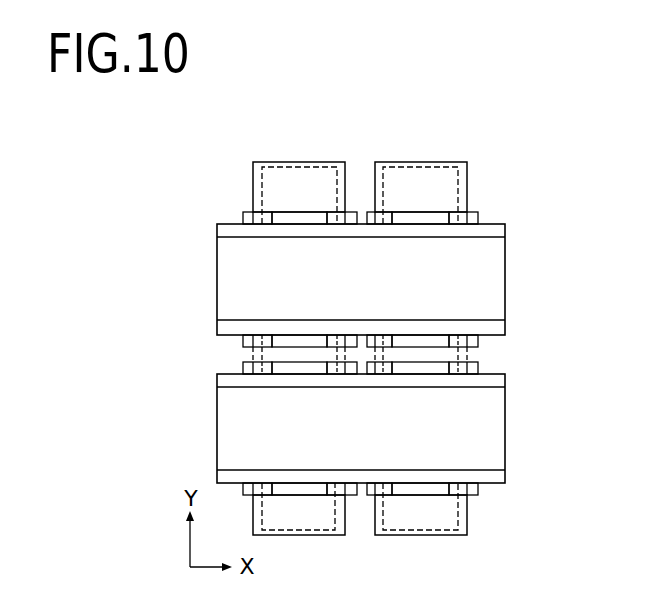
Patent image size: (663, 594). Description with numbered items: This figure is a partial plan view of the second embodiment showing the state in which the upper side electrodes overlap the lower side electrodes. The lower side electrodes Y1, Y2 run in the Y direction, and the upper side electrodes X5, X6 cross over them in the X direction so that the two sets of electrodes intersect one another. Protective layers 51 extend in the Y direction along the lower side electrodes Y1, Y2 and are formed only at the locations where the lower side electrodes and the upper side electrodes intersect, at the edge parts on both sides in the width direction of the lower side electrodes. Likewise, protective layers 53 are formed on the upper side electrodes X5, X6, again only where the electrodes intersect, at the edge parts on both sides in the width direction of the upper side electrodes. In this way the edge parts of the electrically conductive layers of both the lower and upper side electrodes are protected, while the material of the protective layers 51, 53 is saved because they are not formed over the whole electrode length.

The protective layer 51 is at (248, 213).
The protective layer 53 is at (287, 218).
The upper side electrode X5 is at (204, 285).
The upper side electrode X6 is at (204, 435).
The lower side electrode Y1 is at (302, 153).
The lower side electrode Y2 is at (427, 152).